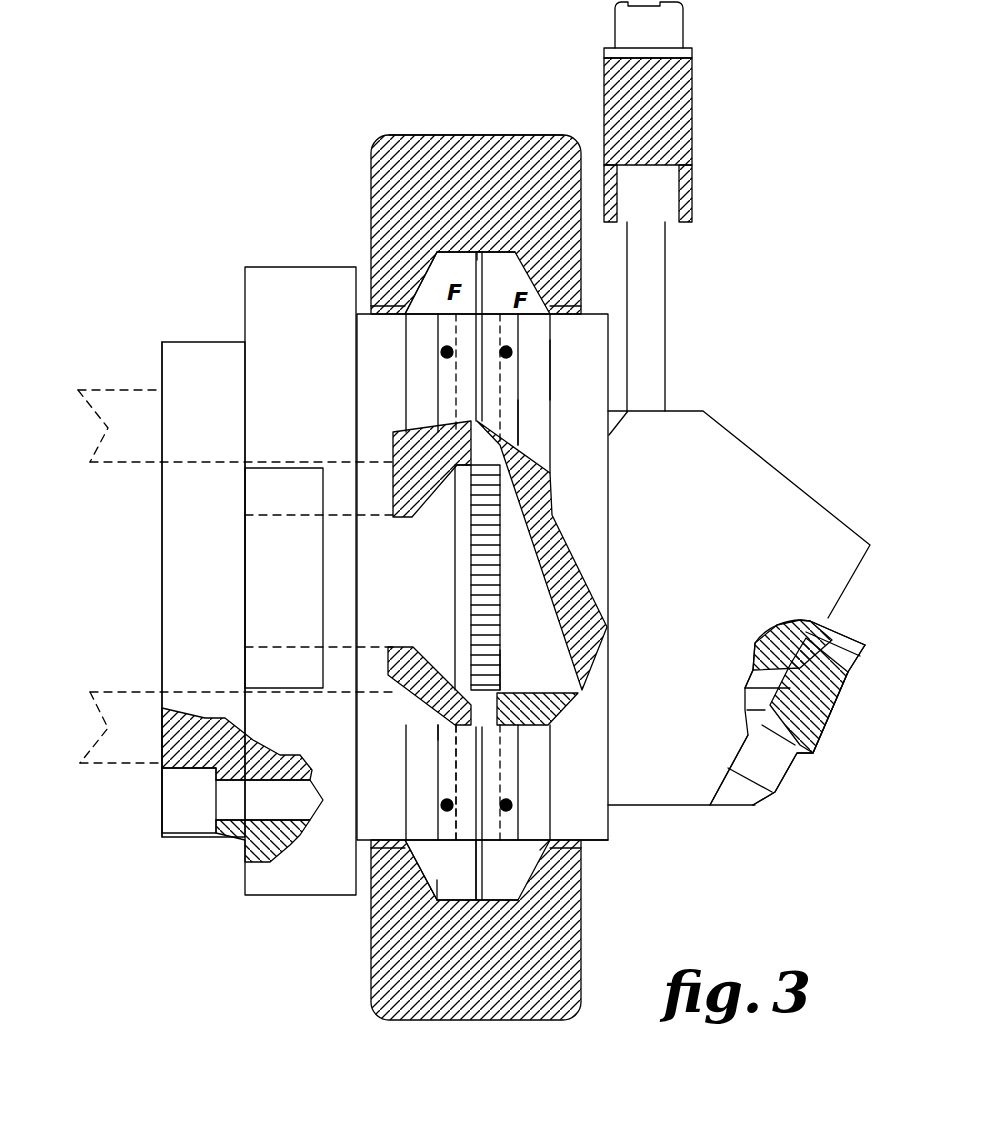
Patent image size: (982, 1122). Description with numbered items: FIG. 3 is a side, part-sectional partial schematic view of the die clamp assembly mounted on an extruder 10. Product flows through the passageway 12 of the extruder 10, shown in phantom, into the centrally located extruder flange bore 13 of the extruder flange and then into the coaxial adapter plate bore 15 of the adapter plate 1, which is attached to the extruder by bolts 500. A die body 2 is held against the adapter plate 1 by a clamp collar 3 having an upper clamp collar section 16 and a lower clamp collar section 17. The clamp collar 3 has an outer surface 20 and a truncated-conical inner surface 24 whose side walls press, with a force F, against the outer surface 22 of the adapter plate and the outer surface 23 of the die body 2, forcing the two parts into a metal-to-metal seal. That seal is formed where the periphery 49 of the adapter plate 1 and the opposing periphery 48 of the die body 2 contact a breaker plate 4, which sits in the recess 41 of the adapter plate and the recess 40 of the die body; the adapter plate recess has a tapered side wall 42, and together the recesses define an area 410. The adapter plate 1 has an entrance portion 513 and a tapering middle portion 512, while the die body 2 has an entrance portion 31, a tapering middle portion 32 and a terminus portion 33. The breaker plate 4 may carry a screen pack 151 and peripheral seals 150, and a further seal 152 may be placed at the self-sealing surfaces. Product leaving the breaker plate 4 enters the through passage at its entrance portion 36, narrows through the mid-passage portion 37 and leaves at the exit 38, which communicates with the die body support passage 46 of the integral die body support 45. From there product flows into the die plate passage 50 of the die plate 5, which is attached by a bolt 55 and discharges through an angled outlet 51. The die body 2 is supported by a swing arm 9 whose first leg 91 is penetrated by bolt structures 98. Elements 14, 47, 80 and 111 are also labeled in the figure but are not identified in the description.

The adapter plate 1 is at (270, 300).
The die body 2 is at (618, 850).
The clamp collar assembly 3 is at (456, 128).
The breaker plate 4 is at (505, 525).
The die plate 5 is at (807, 762).
The swing arm 9 is at (700, 130).
The extruder 10 is at (115, 365).
The passageway 12 is at (108, 470).
The extruder flange bore 13 is at (188, 462).
The stem 14 is at (485, 365).
The adapter plate bore 15 is at (275, 468).
The first clamp collar section 16 is at (415, 140).
The second clamp collar section 17 is at (462, 1020).
The outer surface 20 is at (490, 138).
The outer surface of the adapter plate 22 is at (405, 322).
The outer surface of the die body 23 is at (540, 850).
The inner surface 24 is at (448, 268).
The first portion 31 is at (496, 276).
The second portion 32 is at (534, 417).
The third portion 33 is at (572, 370).
The entrance portion 36 is at (560, 715).
The mid-passage portion 37 is at (519, 667).
The exit 38 is at (605, 690).
The recess 40 is at (523, 427).
The recess 41 is at (450, 388).
The tapered side wall 42 is at (468, 338).
The die body support 45 is at (735, 455).
The die body support passage 46 is at (835, 628).
The upper wedge 47 is at (605, 675).
The periphery 48 is at (755, 680).
The periphery 49 is at (430, 880).
The die plate passage 50 is at (760, 695).
The outlet 51 is at (820, 730).
The bolt 55 is at (850, 675).
The centerline 80 is at (490, 358).
The first leg 91 is at (675, 85).
The bolt structures 98 is at (683, 12).
The plate edge 111 is at (160, 345).
The peripheral seals 150 is at (441, 352).
The screen pack 151 is at (520, 555).
The seal 152 is at (440, 262).
The area 410 is at (462, 742).
The bolts 500 is at (197, 785).
The second portion 512 is at (440, 738).
The first portion 513 is at (462, 826).